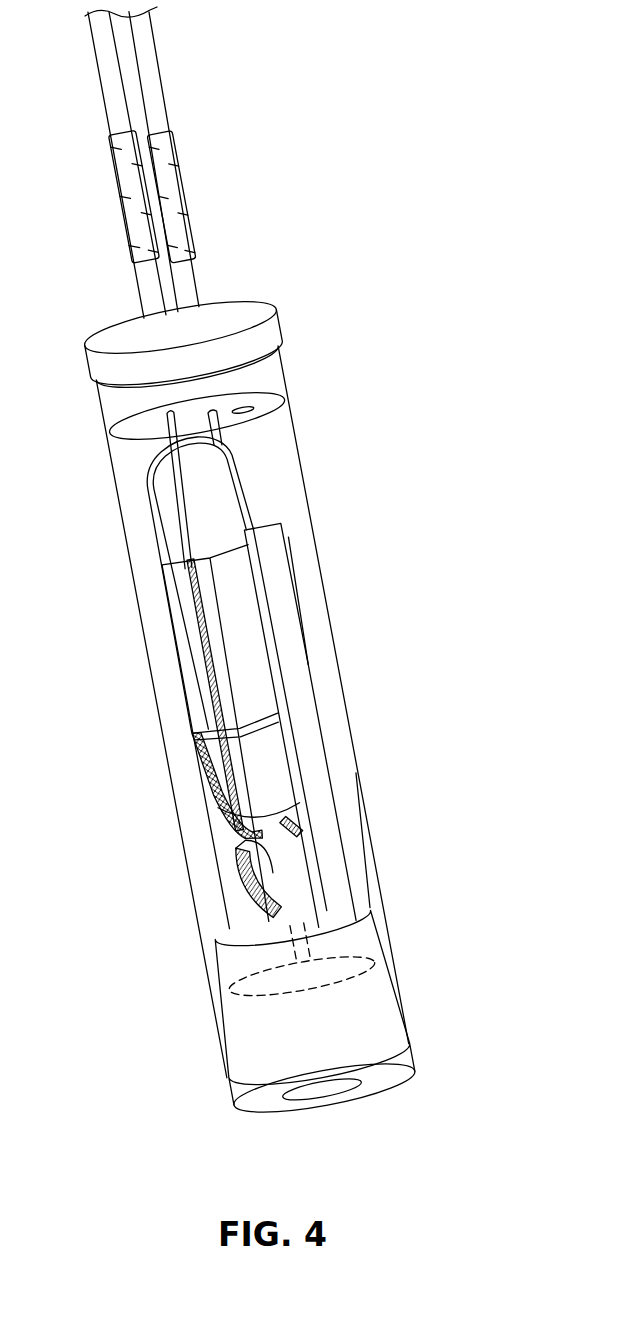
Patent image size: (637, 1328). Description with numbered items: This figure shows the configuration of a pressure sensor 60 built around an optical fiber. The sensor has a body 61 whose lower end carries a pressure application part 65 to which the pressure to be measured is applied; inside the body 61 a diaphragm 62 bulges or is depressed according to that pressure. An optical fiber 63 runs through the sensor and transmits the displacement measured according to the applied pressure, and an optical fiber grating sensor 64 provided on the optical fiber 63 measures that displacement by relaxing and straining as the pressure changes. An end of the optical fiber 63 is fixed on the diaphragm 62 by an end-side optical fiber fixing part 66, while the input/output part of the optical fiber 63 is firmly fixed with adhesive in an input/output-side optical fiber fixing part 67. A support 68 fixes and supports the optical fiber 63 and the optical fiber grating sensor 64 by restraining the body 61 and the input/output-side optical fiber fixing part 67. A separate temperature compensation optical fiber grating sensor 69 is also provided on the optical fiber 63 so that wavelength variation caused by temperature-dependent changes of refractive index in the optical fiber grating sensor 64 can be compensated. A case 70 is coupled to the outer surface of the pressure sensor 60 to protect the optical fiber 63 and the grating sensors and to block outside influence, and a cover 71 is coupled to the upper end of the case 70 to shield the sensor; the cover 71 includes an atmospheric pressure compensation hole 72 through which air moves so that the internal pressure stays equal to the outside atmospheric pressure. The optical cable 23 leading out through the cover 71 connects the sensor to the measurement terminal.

The optical cable 23 is at (118, 53).
The pressure sensor 60 is at (83, 232).
The body 61 is at (355, 1003).
The diaphragm 62 is at (362, 955).
The optical fiber 63 is at (260, 496).
The optical fiber grating sensor 64 is at (242, 843).
The pressure application part 65 is at (322, 1090).
The end-side optical fiber fixing part 66 is at (272, 885).
The input/output-side optical fiber fixing part 67 is at (255, 697).
The support 68 is at (308, 658).
The temperature compensation optical fiber grating sensor 69 is at (200, 770).
The case 70 is at (322, 570).
The cover 71 is at (240, 301).
The atmospheric pressure compensation hole 72 is at (262, 404).